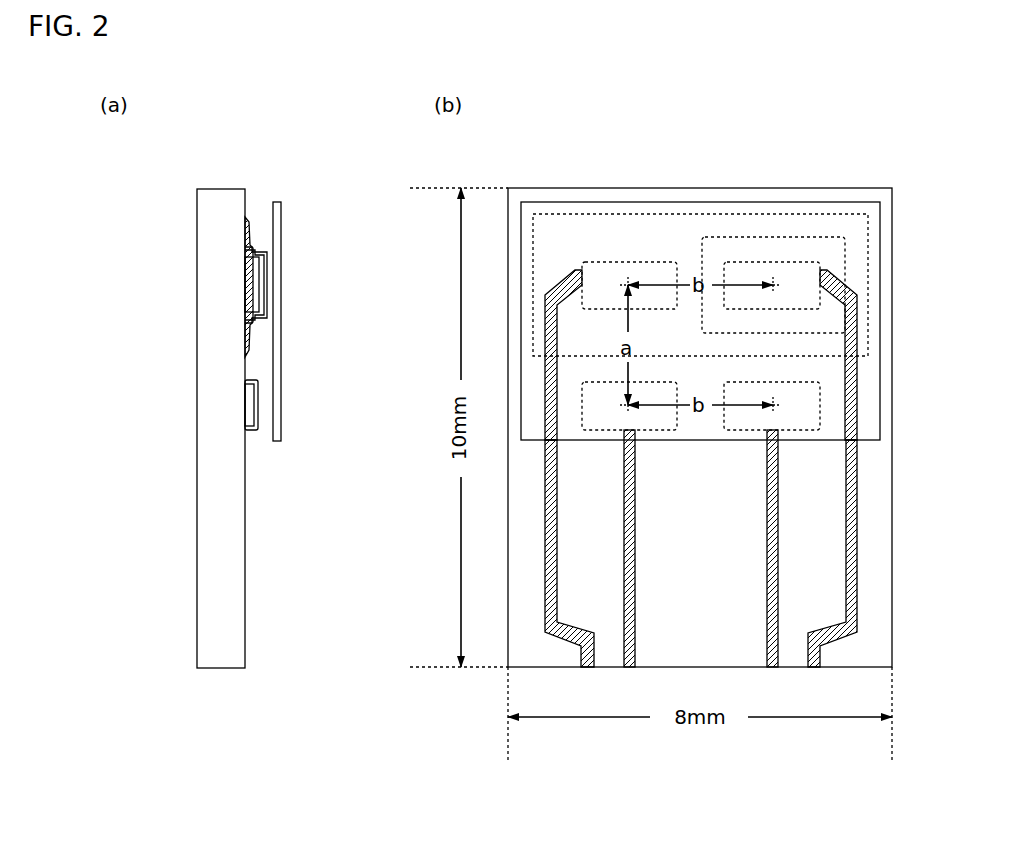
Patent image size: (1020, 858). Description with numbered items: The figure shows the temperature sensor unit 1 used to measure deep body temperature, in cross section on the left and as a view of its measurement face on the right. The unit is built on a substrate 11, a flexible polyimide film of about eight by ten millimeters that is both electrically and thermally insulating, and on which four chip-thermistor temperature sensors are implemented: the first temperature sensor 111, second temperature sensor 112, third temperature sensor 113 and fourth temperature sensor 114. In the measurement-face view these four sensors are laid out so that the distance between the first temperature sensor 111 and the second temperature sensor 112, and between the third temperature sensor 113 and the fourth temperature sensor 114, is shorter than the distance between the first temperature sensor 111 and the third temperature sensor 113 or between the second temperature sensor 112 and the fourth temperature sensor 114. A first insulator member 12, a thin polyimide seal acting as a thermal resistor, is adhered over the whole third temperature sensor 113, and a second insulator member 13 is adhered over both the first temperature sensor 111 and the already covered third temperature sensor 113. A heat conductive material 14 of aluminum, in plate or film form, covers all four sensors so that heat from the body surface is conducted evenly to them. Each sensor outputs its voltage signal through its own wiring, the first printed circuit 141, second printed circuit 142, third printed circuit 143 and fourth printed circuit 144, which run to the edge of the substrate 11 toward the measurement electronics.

The temperature sensor unit 1 is at (276, 137).
The substrate 11 is at (230, 190).
The first insulator member 12 is at (245, 236).
The second insulator member 13 is at (245, 333).
The heat conductive material 14 is at (283, 204).
The first temperature sensor 111 is at (250, 283).
The second temperature sensor 112 is at (250, 406).
The third temperature sensor 113 is at (767, 168).
The fourth temperature sensor 114 is at (822, 432).
The first printed circuit 141 is at (600, 633).
The second printed circuit 142 is at (636, 530).
The third printed circuit 143 is at (842, 625).
The fourth printed circuit 144 is at (767, 570).